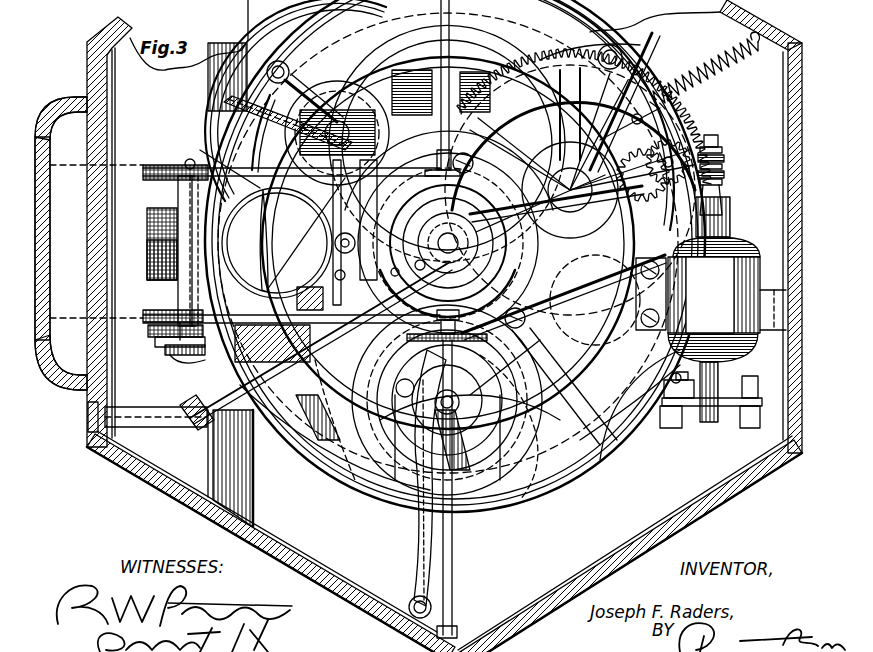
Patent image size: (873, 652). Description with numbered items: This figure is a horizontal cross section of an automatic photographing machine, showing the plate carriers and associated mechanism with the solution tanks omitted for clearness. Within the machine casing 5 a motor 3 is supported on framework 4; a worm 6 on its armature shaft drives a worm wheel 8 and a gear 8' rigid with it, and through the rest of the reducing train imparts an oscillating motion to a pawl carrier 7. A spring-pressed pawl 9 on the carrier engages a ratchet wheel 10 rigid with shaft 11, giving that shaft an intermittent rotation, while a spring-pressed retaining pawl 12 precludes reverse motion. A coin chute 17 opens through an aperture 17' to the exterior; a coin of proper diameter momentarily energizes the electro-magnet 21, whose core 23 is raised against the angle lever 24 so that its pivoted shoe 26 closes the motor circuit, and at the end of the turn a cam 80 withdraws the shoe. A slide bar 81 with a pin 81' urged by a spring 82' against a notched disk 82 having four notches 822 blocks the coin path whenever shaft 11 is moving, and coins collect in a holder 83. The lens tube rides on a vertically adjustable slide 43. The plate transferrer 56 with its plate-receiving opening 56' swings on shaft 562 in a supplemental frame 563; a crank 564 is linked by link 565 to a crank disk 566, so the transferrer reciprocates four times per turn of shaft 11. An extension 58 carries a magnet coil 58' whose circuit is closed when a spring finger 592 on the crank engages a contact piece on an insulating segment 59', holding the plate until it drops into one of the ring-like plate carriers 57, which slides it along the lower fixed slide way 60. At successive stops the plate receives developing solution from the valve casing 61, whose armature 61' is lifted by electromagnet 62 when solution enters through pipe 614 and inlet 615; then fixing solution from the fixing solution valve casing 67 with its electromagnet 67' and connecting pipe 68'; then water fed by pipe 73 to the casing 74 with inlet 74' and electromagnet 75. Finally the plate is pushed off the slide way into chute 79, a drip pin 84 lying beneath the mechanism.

The motor 3 is at (735, 240).
The framework 4 is at (540, 365).
The machine casing 5 is at (803, 106).
The worm 6 is at (724, 156).
The pawl carrier 7 is at (438, 152).
The worm wheel 8 is at (680, 156).
The gear 8' is at (730, 195).
The spring-pressed pawl 9 is at (505, 145).
The ratchet wheel 10 is at (408, 78).
The shaft 11 is at (440, 240).
The spring-pressed retaining pawl 12 is at (515, 290).
The coin chute 17 is at (156, 402).
The aperture 17' is at (71, 417).
The electro-magnet 21 is at (322, 208).
The core 23 is at (334, 243).
The angle lever 24 is at (330, 262).
The pivoted shoe 26 is at (425, 235).
The slide 43 is at (52, 250).
The plate transferrer 56 is at (284, 247).
The plate-receiving opening 56' is at (282, 311).
The shaft 562 is at (187, 162).
The supplemental frame 563 is at (252, 180).
The crank 564 is at (168, 352).
The link 565 is at (218, 400).
The crank disk 566 is at (570, 405).
The plate carrier 57 is at (410, 35).
The extension 58 is at (147, 244).
The magnet coil 58' is at (147, 260).
The segment 59' is at (132, 306).
The spring finger 592 is at (150, 332).
The lower fixed slide way 60 is at (332, 435).
The valve casing 61 is at (281, 100).
The armature 61' is at (447, 400).
The pipe 614 is at (302, 60).
The inlet 615 is at (290, 118).
The electromagnet 62 is at (312, 98).
The fixing solution valve casing 67 is at (612, 39).
The electromagnet 67' is at (599, 38).
The connecting pipe 68' is at (643, 88).
The pipe 73 is at (412, 566).
The casing 74 is at (520, 427).
The inlet 74' is at (469, 430).
The electromagnet 75 is at (480, 452).
The chute 79 is at (300, 370).
The cam 80 is at (334, 276).
The slide bar 81 is at (194, 428).
The pin 81' is at (335, 425).
The notched disk 82 is at (458, 324).
The spring 82' is at (707, 69).
The notches 822 is at (612, 372).
The holder 83 is at (250, 492).
The drip pin 84 is at (405, 500).